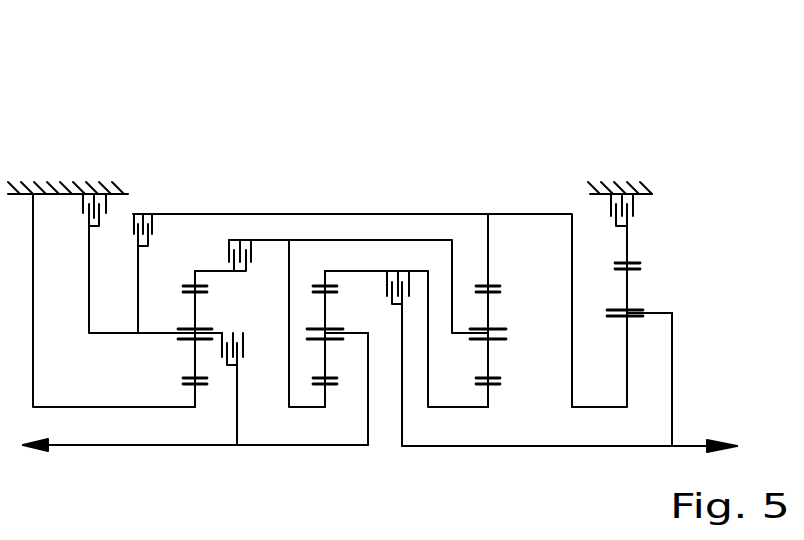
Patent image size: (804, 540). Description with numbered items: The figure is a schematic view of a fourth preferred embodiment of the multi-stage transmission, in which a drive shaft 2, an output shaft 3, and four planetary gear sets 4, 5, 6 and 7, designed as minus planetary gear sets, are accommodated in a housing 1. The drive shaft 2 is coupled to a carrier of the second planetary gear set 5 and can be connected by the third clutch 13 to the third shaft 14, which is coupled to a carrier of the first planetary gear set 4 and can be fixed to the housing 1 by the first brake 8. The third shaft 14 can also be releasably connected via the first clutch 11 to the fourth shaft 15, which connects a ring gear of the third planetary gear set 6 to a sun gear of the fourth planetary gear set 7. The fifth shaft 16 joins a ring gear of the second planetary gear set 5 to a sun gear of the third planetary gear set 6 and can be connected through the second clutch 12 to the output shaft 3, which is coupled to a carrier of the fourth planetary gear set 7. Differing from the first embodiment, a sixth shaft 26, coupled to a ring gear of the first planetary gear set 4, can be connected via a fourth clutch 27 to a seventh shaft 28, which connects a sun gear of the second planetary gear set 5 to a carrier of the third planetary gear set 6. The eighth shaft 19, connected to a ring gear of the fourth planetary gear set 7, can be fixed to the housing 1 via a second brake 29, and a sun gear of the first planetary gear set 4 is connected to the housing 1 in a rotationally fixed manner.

The housing 1 is at (98, 188).
The drive shaft 2 is at (140, 447).
The output shaft 3 is at (672, 385).
The first planetary gear set 4 is at (197, 162).
The second planetary gear set 5 is at (327, 162).
The third planetary gear set 6 is at (489, 162).
The fourth planetary gear set 7 is at (628, 162).
The first brake 8 is at (85, 194).
The first clutch 11 is at (140, 233).
The second clutch 12 is at (395, 282).
The third clutch 13 is at (238, 357).
The third shaft 14 is at (88, 318).
The fourth shaft 15 is at (500, 214).
The fifth shaft 16 is at (460, 407).
The eighth shaft 19 is at (625, 248).
The sixth shaft 26 is at (215, 268).
The fourth clutch 27 is at (238, 255).
The seventh shaft 28 is at (366, 240).
The second brake 29 is at (638, 197).